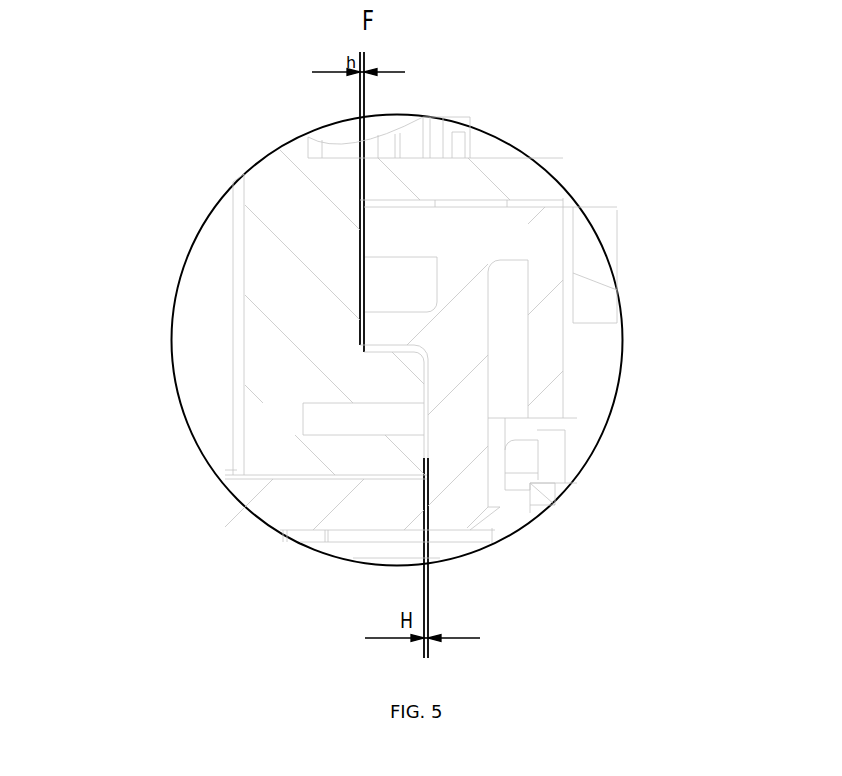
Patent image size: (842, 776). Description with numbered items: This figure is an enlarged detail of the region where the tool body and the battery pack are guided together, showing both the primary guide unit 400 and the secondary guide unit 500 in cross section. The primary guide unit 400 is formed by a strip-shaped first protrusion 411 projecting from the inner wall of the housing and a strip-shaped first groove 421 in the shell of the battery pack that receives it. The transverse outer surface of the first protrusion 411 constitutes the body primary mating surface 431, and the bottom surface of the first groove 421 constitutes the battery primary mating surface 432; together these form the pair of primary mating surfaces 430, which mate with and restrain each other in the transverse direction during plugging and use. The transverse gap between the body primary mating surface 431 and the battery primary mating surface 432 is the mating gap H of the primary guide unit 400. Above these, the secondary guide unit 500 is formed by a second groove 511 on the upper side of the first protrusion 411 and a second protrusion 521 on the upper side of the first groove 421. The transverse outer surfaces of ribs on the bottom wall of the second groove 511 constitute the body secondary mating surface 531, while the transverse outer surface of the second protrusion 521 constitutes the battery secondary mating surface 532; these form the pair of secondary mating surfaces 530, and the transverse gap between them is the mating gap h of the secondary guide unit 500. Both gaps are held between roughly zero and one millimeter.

The primary guide unit 400 is at (105, 273).
The first protrusion 411 is at (363, 413).
The first groove 421 is at (415, 408).
The secondary guide unit 500 is at (562, 95).
The second groove 511 is at (374, 296).
The second protrusion 521 is at (374, 274).
The secondary mating surfaces 530 is at (192, 95).
The body secondary mating surface 531 is at (348, 255).
The battery secondary mating surface 532 is at (353, 230).
The primary mating surfaces 430 is at (258, 612).
The body primary mating surface 431 is at (417, 473).
The battery primary mating surface 432 is at (416, 452).